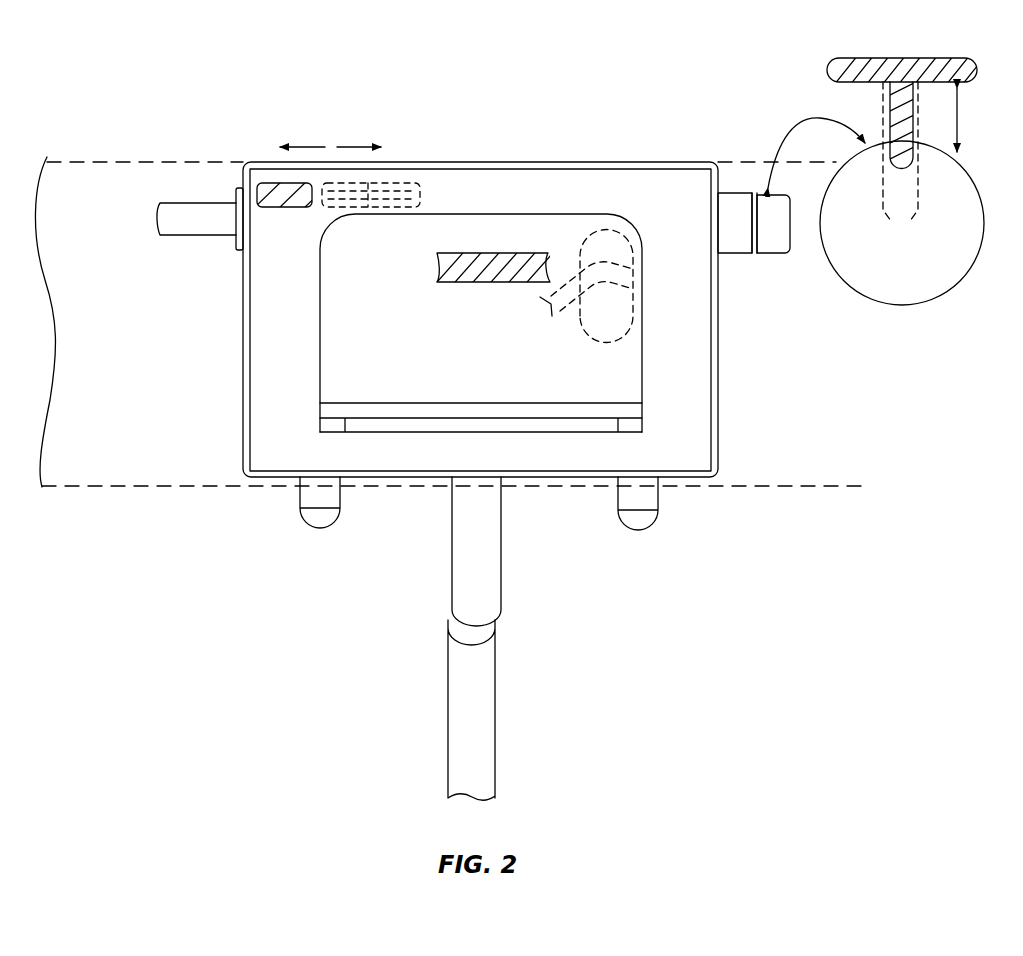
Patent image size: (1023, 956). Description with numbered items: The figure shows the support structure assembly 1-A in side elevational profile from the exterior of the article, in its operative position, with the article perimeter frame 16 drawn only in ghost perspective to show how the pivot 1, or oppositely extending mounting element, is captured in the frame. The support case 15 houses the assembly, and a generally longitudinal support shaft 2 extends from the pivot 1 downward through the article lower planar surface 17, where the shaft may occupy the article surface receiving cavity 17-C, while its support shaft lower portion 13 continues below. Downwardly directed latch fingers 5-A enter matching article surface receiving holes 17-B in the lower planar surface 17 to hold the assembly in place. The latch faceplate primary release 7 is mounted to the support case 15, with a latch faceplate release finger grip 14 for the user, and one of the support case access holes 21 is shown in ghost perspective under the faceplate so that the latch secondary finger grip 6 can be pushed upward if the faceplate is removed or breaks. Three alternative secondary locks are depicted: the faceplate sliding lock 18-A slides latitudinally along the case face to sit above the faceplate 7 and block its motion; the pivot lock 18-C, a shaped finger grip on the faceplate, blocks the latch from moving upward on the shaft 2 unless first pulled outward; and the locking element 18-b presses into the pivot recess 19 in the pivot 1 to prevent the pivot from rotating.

The article perimeter frame 16 is at (100, 180).
The article lower planar surface 17 is at (262, 488).
The support structure assembly 1-A is at (695, 402).
The latch faceplate primary release 7 is at (562, 262).
The latch faceplate release finger grip 14 is at (327, 410).
The support case 15 is at (248, 300).
The faceplate sliding lock 18-A is at (270, 180).
The pivot lock 18-C is at (505, 284).
The latch secondary finger grip 6 is at (610, 247).
The support case access holes 21 is at (610, 305).
The pivot 1 is at (757, 255).
The faceplate lock to shaft 18-b is at (853, 60).
The pivot recess 19 is at (898, 222).
The latch fingers 5-A is at (320, 530).
The article surface receiving hole 17-B is at (343, 488).
The article surface receiving cavity 17-C is at (497, 488).
The support shaft 2 is at (452, 578).
The support shaft lower portion 13 is at (440, 766).